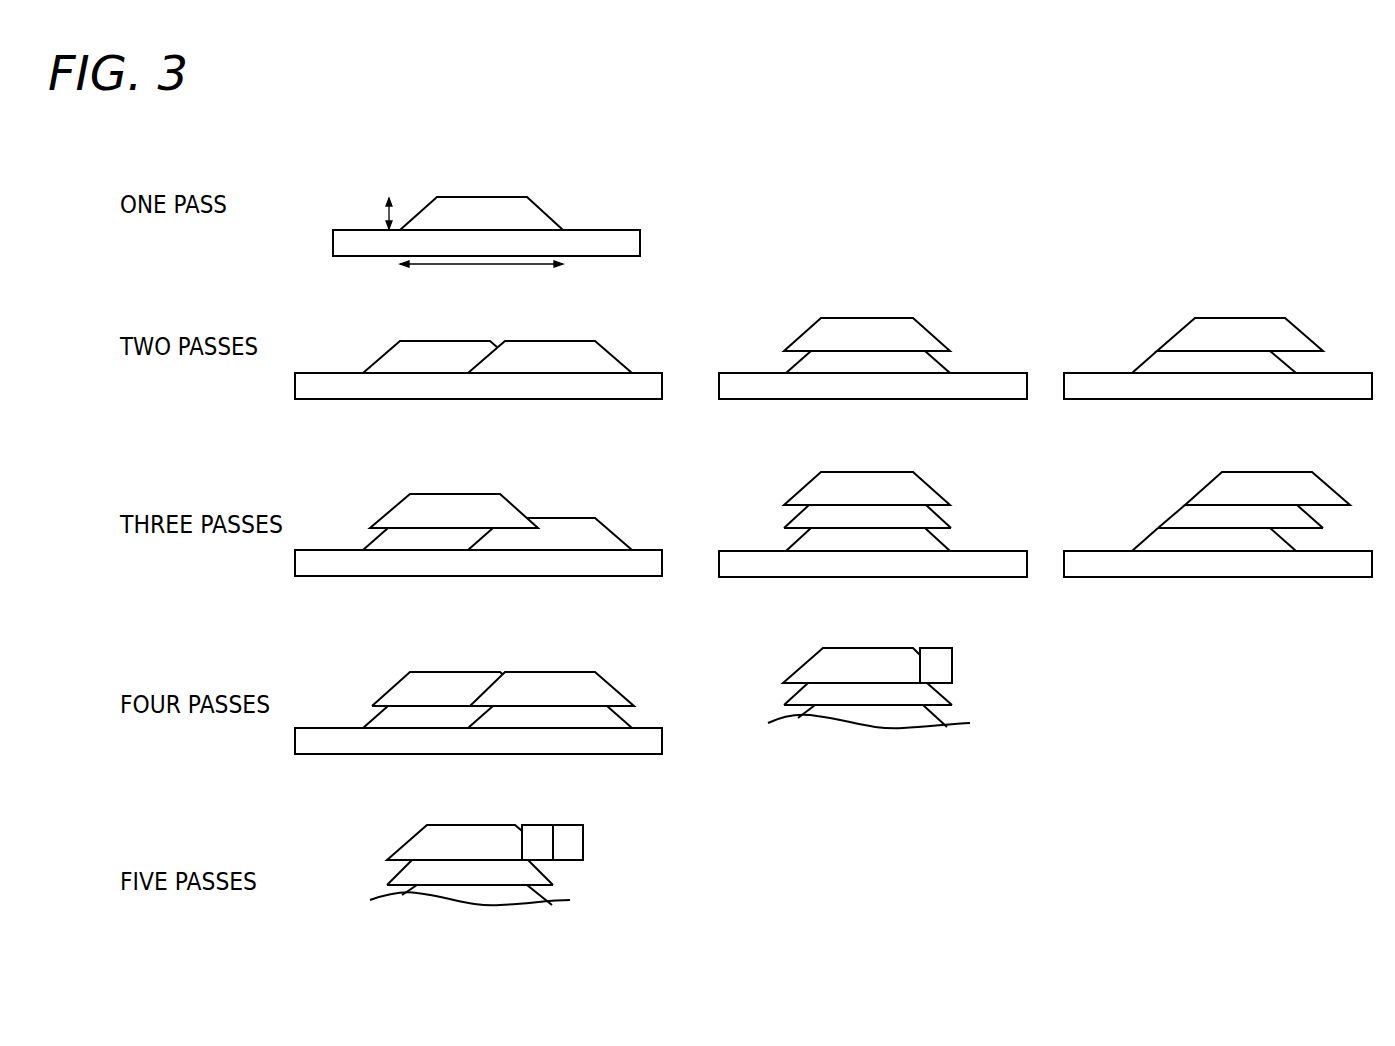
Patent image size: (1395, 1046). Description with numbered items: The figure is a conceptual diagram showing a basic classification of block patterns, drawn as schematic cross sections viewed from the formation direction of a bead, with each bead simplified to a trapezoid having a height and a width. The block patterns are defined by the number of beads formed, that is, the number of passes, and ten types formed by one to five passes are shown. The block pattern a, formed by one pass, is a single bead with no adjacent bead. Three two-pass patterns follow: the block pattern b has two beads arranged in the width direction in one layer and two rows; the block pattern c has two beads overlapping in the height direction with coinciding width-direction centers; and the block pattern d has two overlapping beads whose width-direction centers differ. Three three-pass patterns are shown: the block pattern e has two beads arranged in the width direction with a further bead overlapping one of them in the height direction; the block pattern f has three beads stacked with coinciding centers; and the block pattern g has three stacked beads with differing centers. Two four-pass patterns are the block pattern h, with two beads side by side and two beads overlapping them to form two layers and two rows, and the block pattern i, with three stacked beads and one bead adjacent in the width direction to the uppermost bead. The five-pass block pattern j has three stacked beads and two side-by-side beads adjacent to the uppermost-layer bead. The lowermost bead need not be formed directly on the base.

The block pattern a is at (572, 195).
The block pattern b is at (620, 342).
The block pattern c is at (957, 317).
The block pattern d is at (1302, 317).
The block pattern e is at (620, 522).
The block pattern f is at (957, 495).
The block pattern g is at (1348, 493).
The block pattern h is at (620, 672).
The block pattern i is at (960, 650).
The block pattern j is at (605, 837).